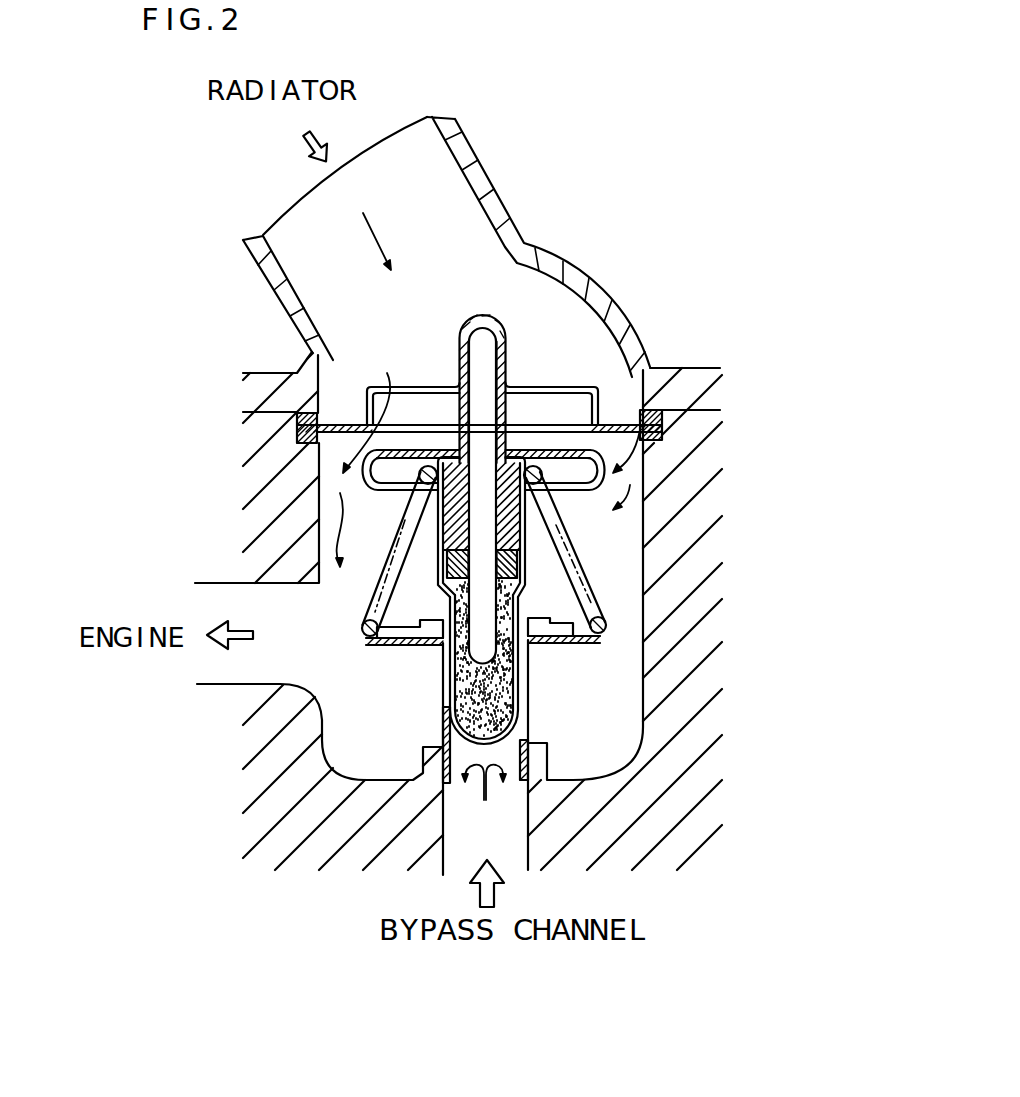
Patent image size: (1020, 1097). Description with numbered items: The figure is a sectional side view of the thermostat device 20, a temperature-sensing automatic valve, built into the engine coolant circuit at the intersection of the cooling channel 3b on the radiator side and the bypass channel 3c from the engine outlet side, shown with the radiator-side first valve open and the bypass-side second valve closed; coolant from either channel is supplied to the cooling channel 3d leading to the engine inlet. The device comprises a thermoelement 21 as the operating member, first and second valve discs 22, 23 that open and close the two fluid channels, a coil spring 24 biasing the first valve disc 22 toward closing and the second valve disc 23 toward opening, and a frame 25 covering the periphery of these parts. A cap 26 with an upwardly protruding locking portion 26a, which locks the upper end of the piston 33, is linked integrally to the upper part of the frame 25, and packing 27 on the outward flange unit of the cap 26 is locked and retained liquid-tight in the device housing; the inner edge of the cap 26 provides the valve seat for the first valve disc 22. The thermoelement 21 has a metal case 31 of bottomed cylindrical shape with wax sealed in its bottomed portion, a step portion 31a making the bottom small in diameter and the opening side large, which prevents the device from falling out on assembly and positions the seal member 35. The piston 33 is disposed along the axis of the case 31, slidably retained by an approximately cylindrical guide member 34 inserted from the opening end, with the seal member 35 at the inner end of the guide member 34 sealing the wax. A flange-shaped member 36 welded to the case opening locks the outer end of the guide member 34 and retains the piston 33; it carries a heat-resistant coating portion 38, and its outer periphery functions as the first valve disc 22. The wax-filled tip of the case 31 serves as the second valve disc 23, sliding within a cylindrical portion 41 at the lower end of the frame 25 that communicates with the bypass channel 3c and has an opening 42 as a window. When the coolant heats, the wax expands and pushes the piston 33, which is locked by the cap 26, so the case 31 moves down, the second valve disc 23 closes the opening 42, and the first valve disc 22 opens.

The cooling channel 3b is at (482, 190).
The bypass channel 3c is at (520, 828).
The cooling channel 3d is at (212, 684).
The thermostat device 20 is at (362, 355).
The thermoelement 21 is at (431, 604).
The first valve disc 22 is at (668, 443).
The second valve disc 23 is at (530, 760).
The coil spring 24 is at (525, 600).
The frame 25 is at (603, 643).
The cap 26 is at (600, 420).
The locking portion 26a is at (490, 320).
The packing 27 is at (668, 410).
The case 31 is at (387, 642).
The step portion 31a is at (603, 617).
The piston 33 is at (541, 445).
The guide member 34 is at (438, 537).
The seal member 35 is at (527, 553).
The flange-shaped member 36 is at (572, 390).
The coating portion 38 is at (602, 447).
The cylindrical portion 41 is at (530, 733).
The opening 42 is at (530, 683).